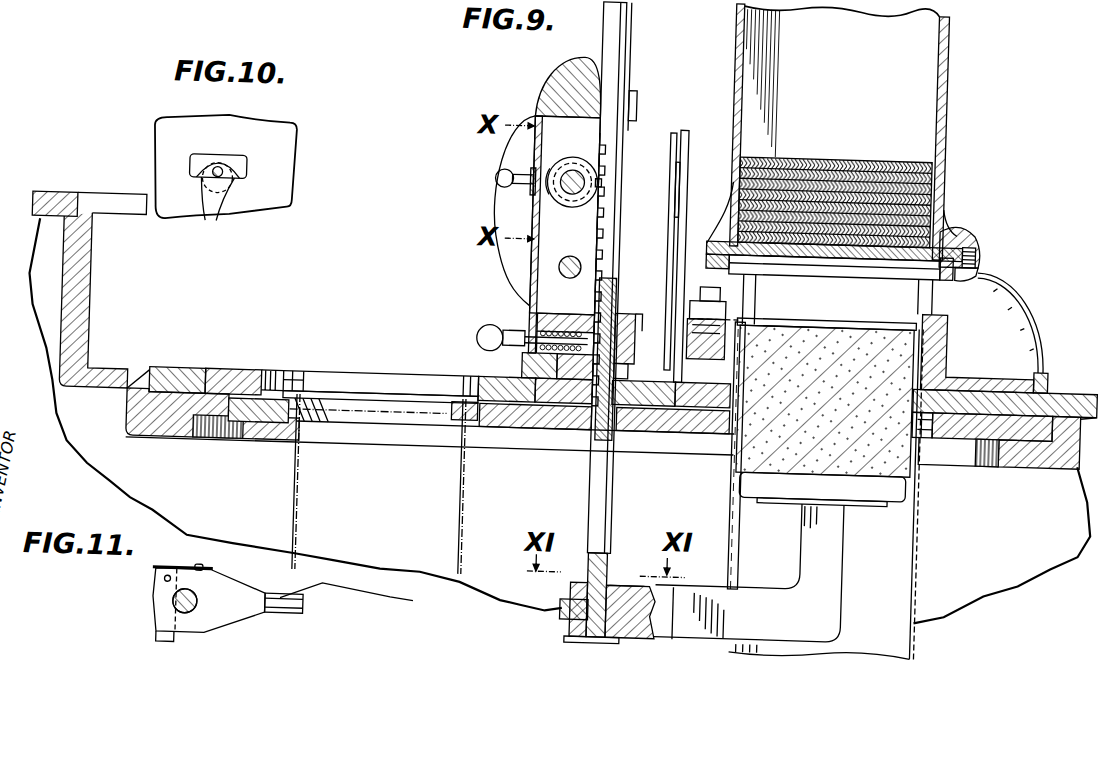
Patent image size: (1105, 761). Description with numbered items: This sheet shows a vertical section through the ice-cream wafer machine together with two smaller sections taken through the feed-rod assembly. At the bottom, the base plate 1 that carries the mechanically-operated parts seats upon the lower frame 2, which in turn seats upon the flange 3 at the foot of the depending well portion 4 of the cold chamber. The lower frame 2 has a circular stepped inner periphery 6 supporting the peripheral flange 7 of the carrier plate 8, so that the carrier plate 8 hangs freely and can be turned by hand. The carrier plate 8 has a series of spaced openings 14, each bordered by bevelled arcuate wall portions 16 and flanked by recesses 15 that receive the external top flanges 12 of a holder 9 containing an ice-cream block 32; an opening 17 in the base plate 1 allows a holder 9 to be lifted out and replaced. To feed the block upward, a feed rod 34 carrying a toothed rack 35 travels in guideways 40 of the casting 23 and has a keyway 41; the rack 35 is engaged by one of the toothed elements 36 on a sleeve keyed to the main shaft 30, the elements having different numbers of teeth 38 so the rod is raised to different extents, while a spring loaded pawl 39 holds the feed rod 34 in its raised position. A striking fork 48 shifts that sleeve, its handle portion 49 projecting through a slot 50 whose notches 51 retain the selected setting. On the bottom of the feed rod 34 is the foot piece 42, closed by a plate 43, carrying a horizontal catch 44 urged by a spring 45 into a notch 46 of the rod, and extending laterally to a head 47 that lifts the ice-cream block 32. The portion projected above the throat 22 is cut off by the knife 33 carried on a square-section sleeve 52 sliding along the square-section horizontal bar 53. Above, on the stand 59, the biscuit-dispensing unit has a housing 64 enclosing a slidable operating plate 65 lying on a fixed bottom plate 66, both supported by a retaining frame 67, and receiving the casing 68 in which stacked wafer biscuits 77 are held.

In FIG. 9, the base plate 1 is at (177, 380).
In FIG. 9, the lower frame 2 is at (223, 450).
In FIG. 9, the flange 3 is at (183, 452).
In FIG. 9, the depending well portion 4 is at (84, 319).
In FIG. 9, the circular stepped inner periphery 6 is at (984, 456).
In FIG. 9, the peripheral flange 7 is at (240, 408).
In FIG. 9, the carrier plate 8 is at (542, 431).
In FIG. 9, the holder 9 is at (900, 630).
In FIG. 9, the external top flange 12 is at (930, 430).
In FIG. 9, the opening 14 is at (421, 432).
In FIG. 9, the recess 15 is at (733, 452).
In FIG. 9, the arcuate wall portion 16 is at (370, 400).
In FIG. 9, the opening 17 is at (418, 386).
In FIG. 9, the throat 22 is at (752, 322).
In FIG. 9, the casting 23 is at (534, 90).
In FIG. 9, the main shaft 30 is at (567, 196).
In FIG. 9, the ice-cream block 32 is at (875, 440).
In FIG. 9, the knife 33 is at (880, 319).
In FIG. 9, the feed rod 34 is at (617, 46).
In FIG. 11, the feed rod 34 is at (197, 610).
In FIG. 9, the toothed rack 35 is at (574, 258).
In FIG. 9, the toothed element 36 is at (568, 158).
In FIG. 9, the teeth 38 is at (592, 177).
In FIG. 9, the spring loaded pawl 39 is at (580, 316).
In FIG. 9, the guideway 40 is at (625, 313).
In FIG. 9, the keyway 41 is at (614, 290).
In FIG. 11, the keyway 41 is at (203, 616).
In FIG. 9, the foot piece 42 is at (636, 588).
In FIG. 11, the foot piece 42 is at (271, 622).
In FIG. 9, the plate 43 is at (571, 642).
In FIG. 9, the horizontal catch 44 is at (566, 612).
In FIG. 11, the horizontal catch 44 is at (159, 600).
In FIG. 11, the spring 45 is at (158, 580).
In FIG. 9, the notch 46 is at (620, 612).
In FIG. 9, the head 47 is at (789, 494).
In FIG. 9, the striking fork 48 is at (546, 206).
In FIG. 9, the handle portion 49 is at (489, 181).
In FIG. 9, the slot 50 is at (524, 176).
In FIG. 10, the slot 50 is at (240, 177).
In FIG. 10, the notch 51 is at (209, 233).
In FIG. 9, the square-section sleeve 52 is at (720, 302).
In FIG. 9, the square-section horizontal bar 53 is at (700, 352).
In FIG. 9, the stand 59 is at (1022, 283).
In FIG. 9, the housing 64 is at (958, 232).
In FIG. 9, the slidable operating plate 65 is at (944, 216).
In FIG. 9, the fixed bottom plate 66 is at (972, 250).
In FIG. 9, the retaining frame 67 is at (953, 270).
In FIG. 9, the casing 68 is at (939, 72).
In FIG. 9, the wafer biscuits 77 is at (836, 153).